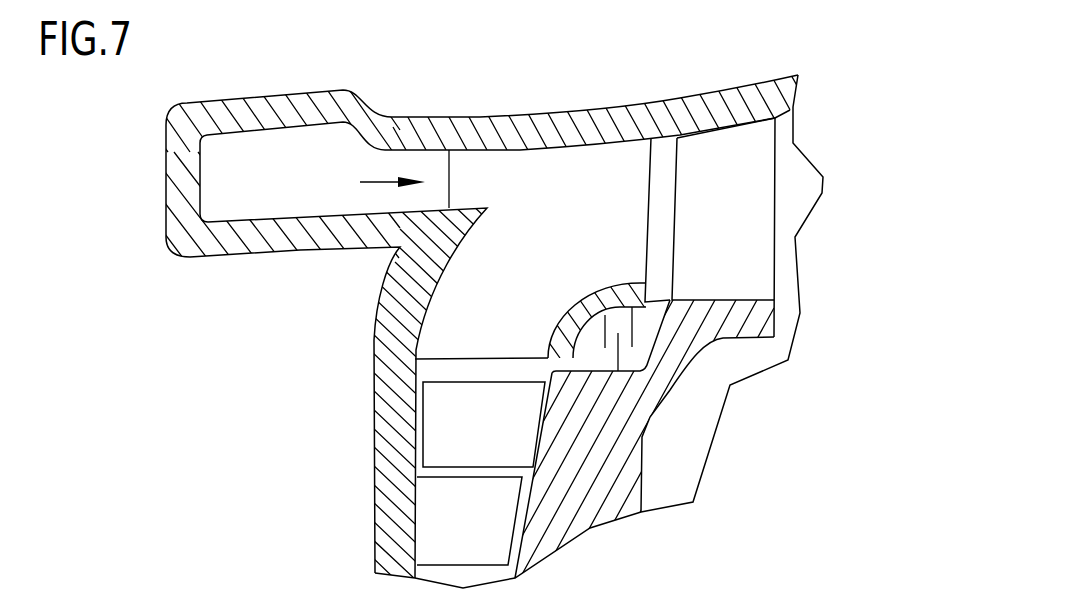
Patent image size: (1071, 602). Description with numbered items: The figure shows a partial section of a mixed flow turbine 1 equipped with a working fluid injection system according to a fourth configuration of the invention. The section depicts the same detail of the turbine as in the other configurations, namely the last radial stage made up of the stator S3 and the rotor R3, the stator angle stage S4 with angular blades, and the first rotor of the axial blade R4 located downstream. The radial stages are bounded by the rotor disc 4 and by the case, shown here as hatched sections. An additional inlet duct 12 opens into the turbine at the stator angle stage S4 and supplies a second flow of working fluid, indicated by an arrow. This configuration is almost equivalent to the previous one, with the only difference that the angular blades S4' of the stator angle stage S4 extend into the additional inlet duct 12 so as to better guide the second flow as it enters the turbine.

The mixed flow turbine 1 is at (884, 49).
The additional inlet duct 12 is at (257, 180).
The rotor disc 4 is at (587, 448).
The stator angle stage S4 is at (542, 254).
The angular blades S4' is at (451, 126).
The first rotor of the axial blade R4 is at (738, 231).
The last radial stage rotor R3 is at (497, 440).
The last radial stage stator S3 is at (483, 538).